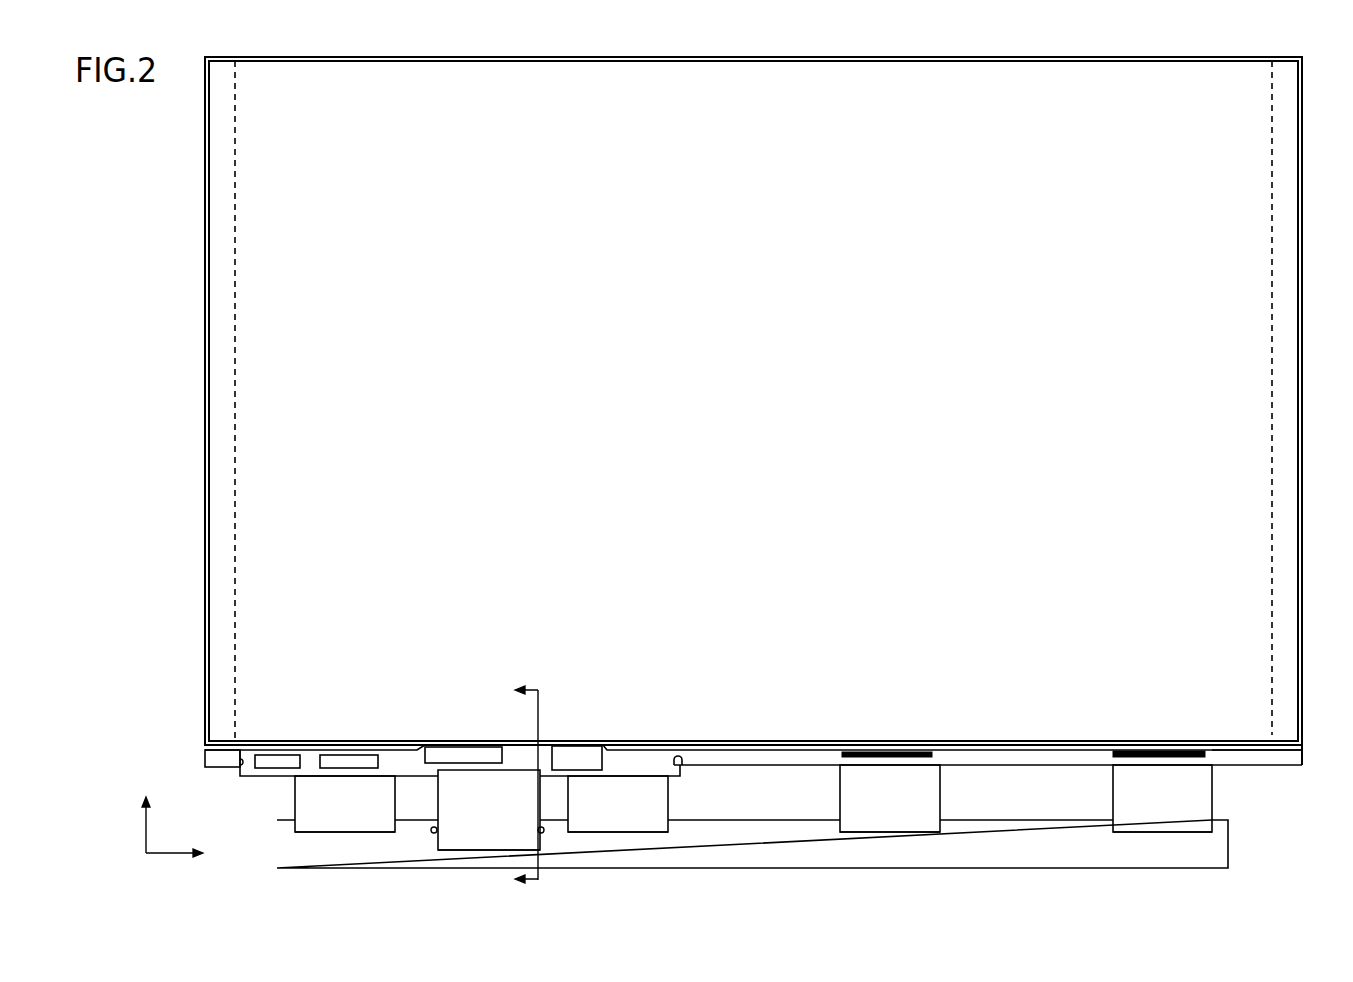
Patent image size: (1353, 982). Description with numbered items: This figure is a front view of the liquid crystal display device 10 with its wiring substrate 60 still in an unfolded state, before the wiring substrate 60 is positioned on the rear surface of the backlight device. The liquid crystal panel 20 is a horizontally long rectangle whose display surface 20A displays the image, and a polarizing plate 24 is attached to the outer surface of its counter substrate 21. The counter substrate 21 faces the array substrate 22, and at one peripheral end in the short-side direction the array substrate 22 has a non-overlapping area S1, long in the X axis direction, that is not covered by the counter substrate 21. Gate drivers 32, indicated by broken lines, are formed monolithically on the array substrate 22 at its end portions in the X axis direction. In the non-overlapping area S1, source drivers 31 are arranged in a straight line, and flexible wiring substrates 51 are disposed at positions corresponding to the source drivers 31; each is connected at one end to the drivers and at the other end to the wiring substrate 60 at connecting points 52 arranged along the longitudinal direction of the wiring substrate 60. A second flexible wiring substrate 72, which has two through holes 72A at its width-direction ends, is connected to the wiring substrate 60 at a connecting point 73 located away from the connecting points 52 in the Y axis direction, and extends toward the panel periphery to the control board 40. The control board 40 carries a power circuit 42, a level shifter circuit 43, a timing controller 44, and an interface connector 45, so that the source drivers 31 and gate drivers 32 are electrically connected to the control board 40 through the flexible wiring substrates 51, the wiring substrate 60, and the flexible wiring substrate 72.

The liquid crystal display device 10 is at (746, 465).
The liquid crystal panel 20 is at (753, 385).
The display surface 20A is at (940, 53).
The polarizing plate 24 is at (753, 374).
The gate driver 32 is at (756, 401).
The counter substrate 21 is at (777, 722).
The array substrate 22 is at (1012, 791).
The non-overlapping area S1 is at (1257, 793).
The control board 40 is at (443, 832).
The power circuit 42 is at (271, 791).
The level shifter circuit 43 is at (261, 665).
The timing controller 44 is at (642, 763).
The interface connector 45 is at (323, 611).
The flexible wiring substrate 51 is at (753, 842).
The connecting point 52 is at (767, 879).
The source driver 31 is at (1014, 831).
The wiring substrate 60 is at (752, 870).
The flexible wiring substrate 72 is at (489, 842).
The through hole 72A is at (492, 877).
The connecting point 73 is at (487, 882).